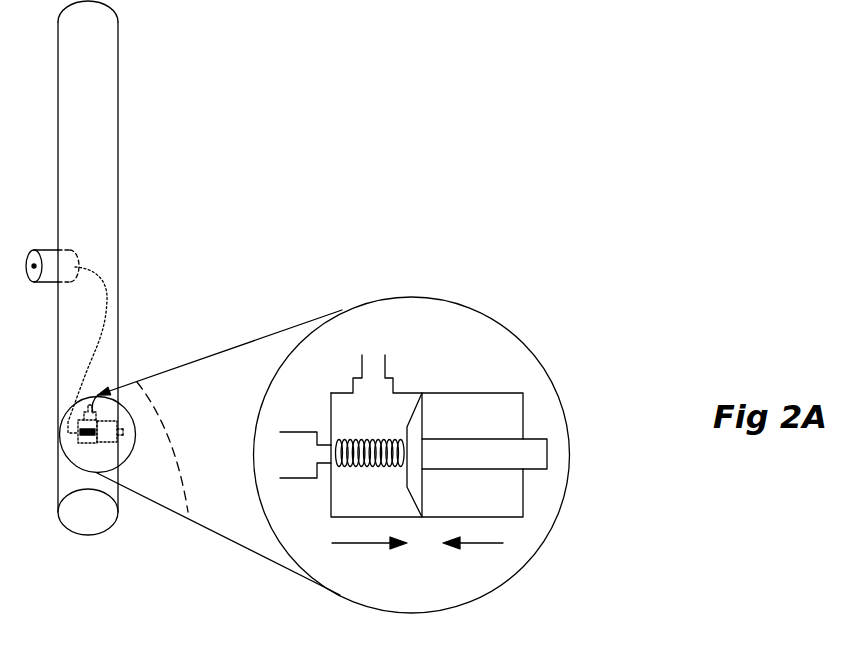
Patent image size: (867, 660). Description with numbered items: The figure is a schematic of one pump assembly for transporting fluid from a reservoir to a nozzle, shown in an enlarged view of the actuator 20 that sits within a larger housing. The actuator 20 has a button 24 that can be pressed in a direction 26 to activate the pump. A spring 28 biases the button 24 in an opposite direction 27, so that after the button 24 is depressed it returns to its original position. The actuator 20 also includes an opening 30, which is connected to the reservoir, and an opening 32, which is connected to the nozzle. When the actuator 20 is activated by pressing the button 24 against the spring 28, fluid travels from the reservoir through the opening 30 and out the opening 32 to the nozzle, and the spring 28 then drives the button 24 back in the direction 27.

The actuator 20 is at (487, 317).
The button 24 is at (547, 452).
The pressing direction 26 is at (470, 545).
The return direction 27 is at (363, 547).
The spring 28 is at (355, 467).
The opening 30 is at (372, 362).
The opening 32 is at (292, 452).